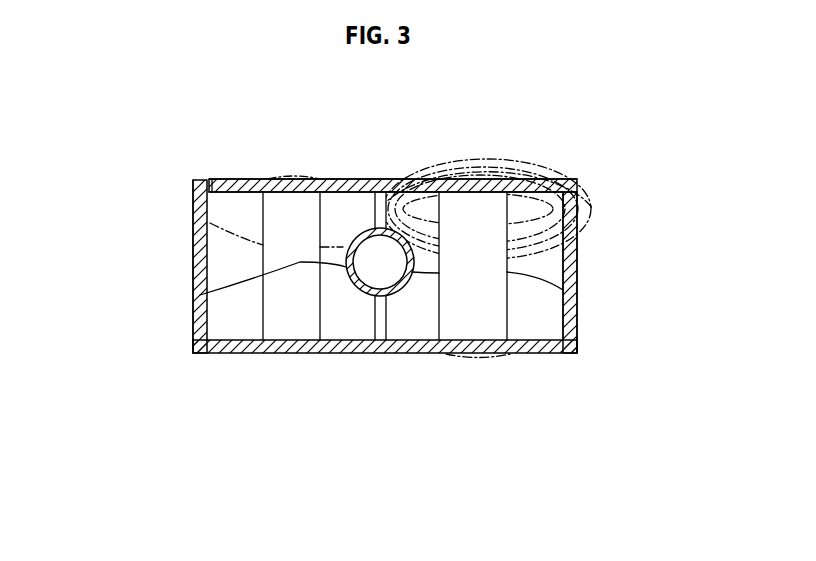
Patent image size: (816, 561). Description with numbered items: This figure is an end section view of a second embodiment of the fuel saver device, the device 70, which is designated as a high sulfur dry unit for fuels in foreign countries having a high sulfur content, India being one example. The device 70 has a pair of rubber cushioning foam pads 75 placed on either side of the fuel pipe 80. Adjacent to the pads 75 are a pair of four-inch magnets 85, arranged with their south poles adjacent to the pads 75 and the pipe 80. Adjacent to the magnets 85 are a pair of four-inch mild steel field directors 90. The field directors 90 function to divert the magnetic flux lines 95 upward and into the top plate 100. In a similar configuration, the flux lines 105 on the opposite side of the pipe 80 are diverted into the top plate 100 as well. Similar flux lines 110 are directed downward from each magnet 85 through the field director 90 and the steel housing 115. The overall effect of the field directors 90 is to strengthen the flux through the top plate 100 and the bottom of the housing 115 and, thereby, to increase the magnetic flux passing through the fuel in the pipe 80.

The fuel saver device 70 is at (607, 129).
The rubber cushioning foam pads 75 is at (415, 325).
The fuel pipe 80 is at (200, 295).
The magnets 85 is at (290, 325).
The field directors 90 is at (193, 327).
The magnetic flux lines 95 is at (500, 152).
The top plate 100 is at (355, 178).
The flux lines 105 is at (280, 178).
The flux lines 110 is at (490, 356).
The steel housing 115 is at (565, 298).